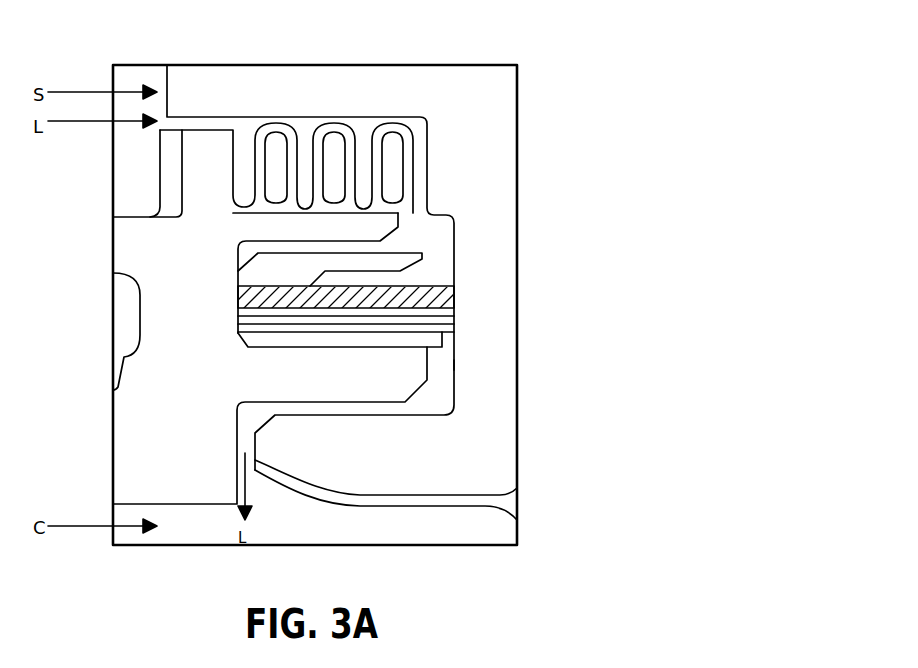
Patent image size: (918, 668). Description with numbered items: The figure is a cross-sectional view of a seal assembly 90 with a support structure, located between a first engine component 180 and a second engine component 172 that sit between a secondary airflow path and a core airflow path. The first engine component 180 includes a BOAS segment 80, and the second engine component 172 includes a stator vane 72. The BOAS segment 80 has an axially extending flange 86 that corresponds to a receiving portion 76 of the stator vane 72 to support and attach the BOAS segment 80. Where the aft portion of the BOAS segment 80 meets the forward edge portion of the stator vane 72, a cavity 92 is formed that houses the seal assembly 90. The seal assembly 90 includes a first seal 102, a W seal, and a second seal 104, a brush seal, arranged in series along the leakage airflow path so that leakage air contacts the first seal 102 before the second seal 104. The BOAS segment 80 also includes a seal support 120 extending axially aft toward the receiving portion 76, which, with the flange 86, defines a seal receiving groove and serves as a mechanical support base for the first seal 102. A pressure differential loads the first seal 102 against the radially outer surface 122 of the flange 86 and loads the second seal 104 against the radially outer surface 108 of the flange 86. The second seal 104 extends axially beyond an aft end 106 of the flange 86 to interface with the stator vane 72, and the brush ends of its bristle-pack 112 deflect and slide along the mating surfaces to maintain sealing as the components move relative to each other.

The stator vane 72 is at (500, 465).
The receiving portion 76 is at (457, 367).
The BOAS segment 80 is at (127, 420).
The flange 86 is at (292, 385).
The seal assembly 90 is at (525, 118).
The cavity 92 is at (418, 233).
The first seal 102 is at (421, 105).
The second seal 104 is at (256, 293).
The aft end 106 is at (427, 362).
The radially outer surface 108 is at (262, 350).
The bristle-pack 112 is at (458, 286).
The seal support 120 is at (293, 228).
The radially outer surface 122 is at (276, 207).
The second engine component 172 is at (497, 418).
The first engine component 180 is at (127, 408).